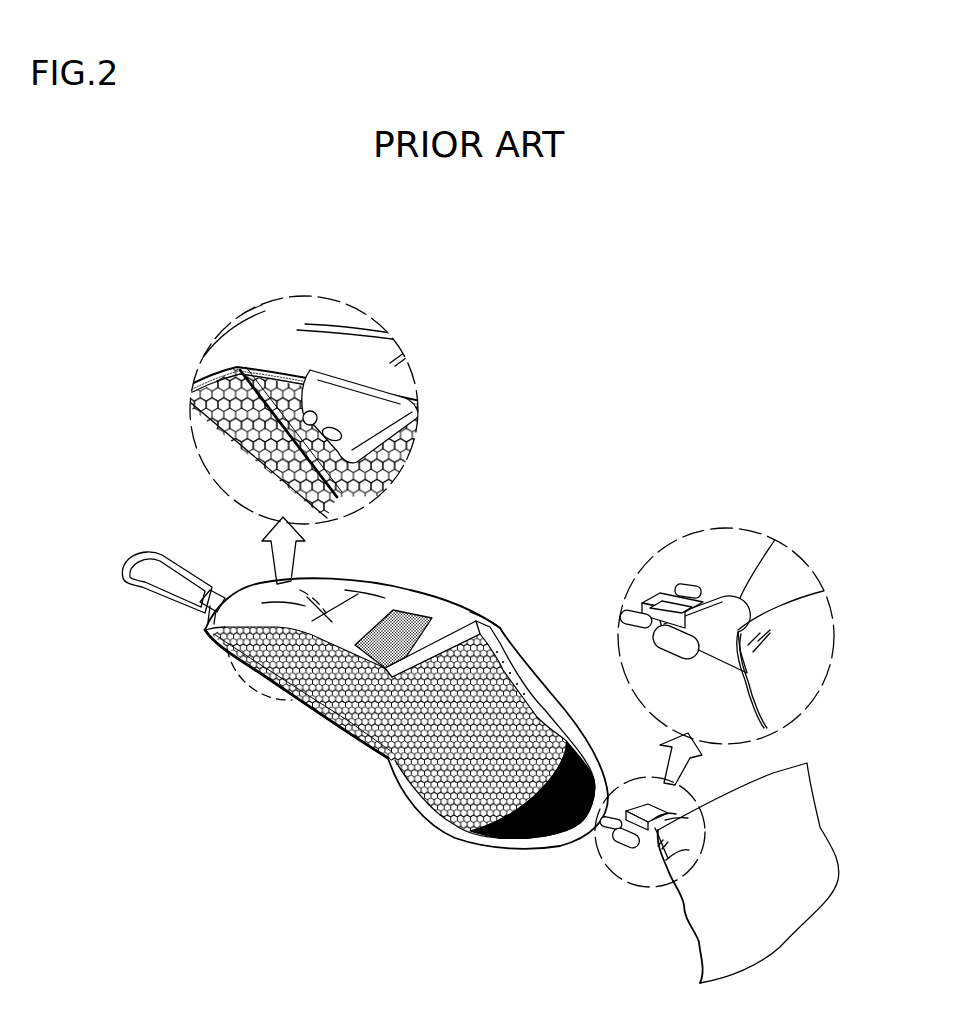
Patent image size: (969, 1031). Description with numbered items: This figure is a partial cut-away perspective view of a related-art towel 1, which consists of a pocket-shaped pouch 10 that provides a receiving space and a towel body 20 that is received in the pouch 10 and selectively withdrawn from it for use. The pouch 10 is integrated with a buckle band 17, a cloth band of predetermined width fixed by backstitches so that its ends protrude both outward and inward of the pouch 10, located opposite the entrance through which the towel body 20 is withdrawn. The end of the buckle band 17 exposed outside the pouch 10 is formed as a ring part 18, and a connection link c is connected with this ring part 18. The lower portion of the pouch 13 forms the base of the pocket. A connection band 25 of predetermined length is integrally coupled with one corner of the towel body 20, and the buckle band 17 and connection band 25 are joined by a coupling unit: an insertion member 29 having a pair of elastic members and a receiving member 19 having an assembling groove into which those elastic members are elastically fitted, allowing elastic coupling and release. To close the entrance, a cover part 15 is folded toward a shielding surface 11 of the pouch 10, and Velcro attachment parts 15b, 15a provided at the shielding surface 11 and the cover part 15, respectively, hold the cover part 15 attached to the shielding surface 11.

The towel 1 is at (224, 728).
The pouch 10 is at (481, 599).
The shielding surface 11 is at (380, 592).
The lower shell 13 is at (323, 727).
The cover part 15 is at (548, 695).
The attachment part 15a is at (548, 838).
The attachment part 15b is at (412, 608).
The buckle band 17 is at (297, 383).
The ring part 18 is at (214, 598).
The receiving member 19 is at (382, 417).
The towel body 20 is at (708, 913).
The connection band 25 is at (740, 620).
The insertion member 29 is at (686, 590).
The connection link c is at (124, 582).